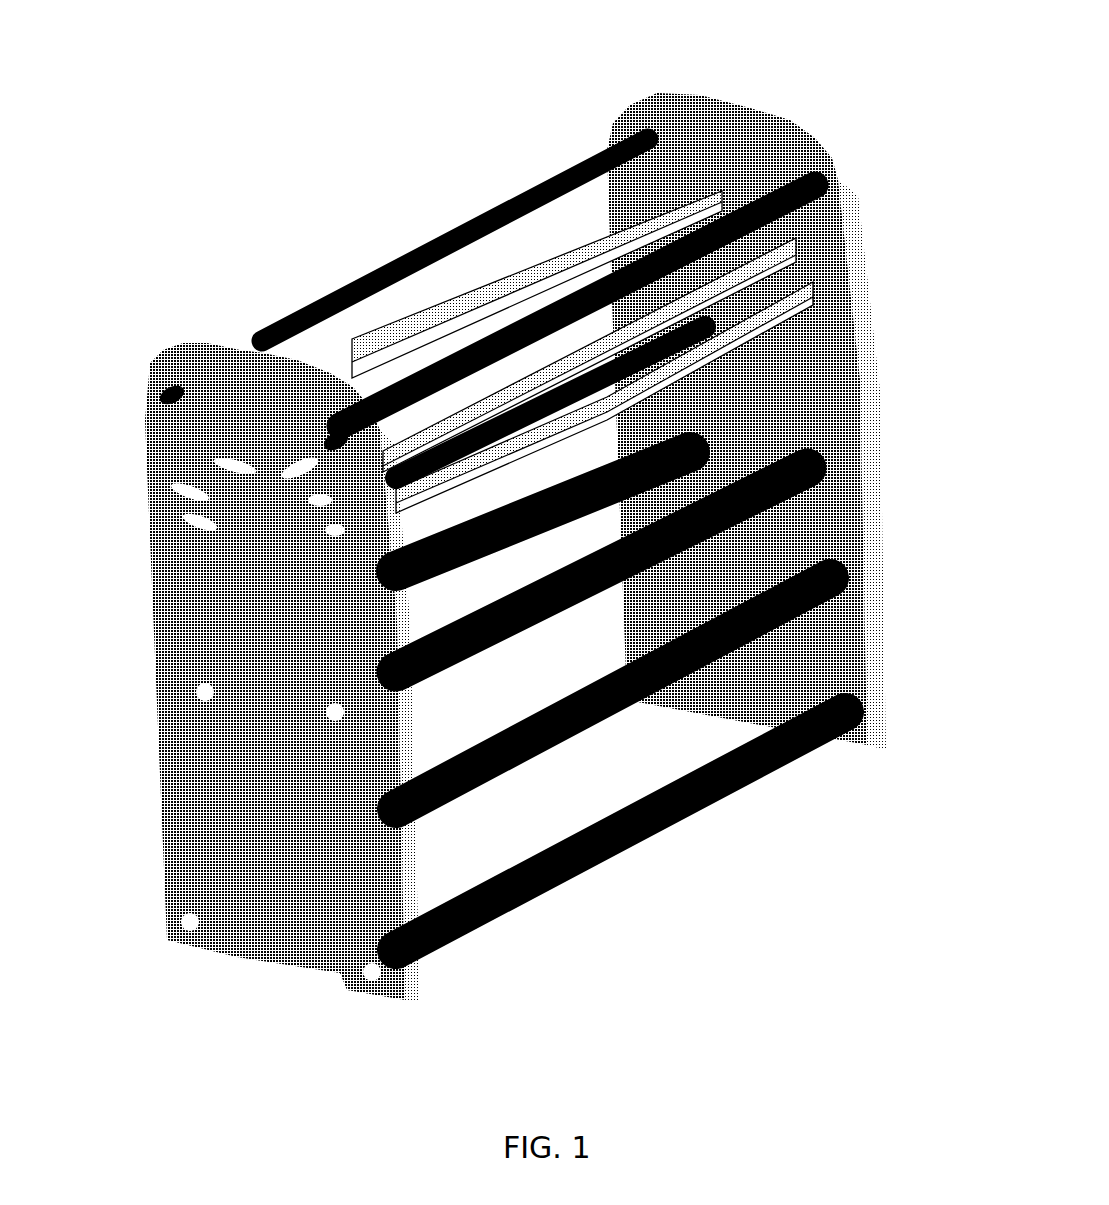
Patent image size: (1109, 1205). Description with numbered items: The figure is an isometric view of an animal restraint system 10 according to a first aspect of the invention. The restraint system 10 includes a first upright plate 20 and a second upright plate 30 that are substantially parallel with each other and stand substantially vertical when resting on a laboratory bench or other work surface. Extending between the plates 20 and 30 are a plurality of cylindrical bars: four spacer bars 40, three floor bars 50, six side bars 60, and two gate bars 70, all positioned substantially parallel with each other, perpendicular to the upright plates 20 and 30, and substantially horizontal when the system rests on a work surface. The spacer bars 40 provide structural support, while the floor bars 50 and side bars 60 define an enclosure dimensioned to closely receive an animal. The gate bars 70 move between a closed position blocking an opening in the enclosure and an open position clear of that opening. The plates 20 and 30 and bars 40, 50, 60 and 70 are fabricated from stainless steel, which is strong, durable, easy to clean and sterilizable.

The animal restraint system 10 is at (550, 73).
The first upright plate 20 is at (153, 652).
The second upright plate 30 is at (868, 386).
The spacer bars 40 is at (512, 553).
The floor bars 50 is at (855, 342).
The side bars 60 is at (522, 306).
The gate bars 70 is at (374, 276).